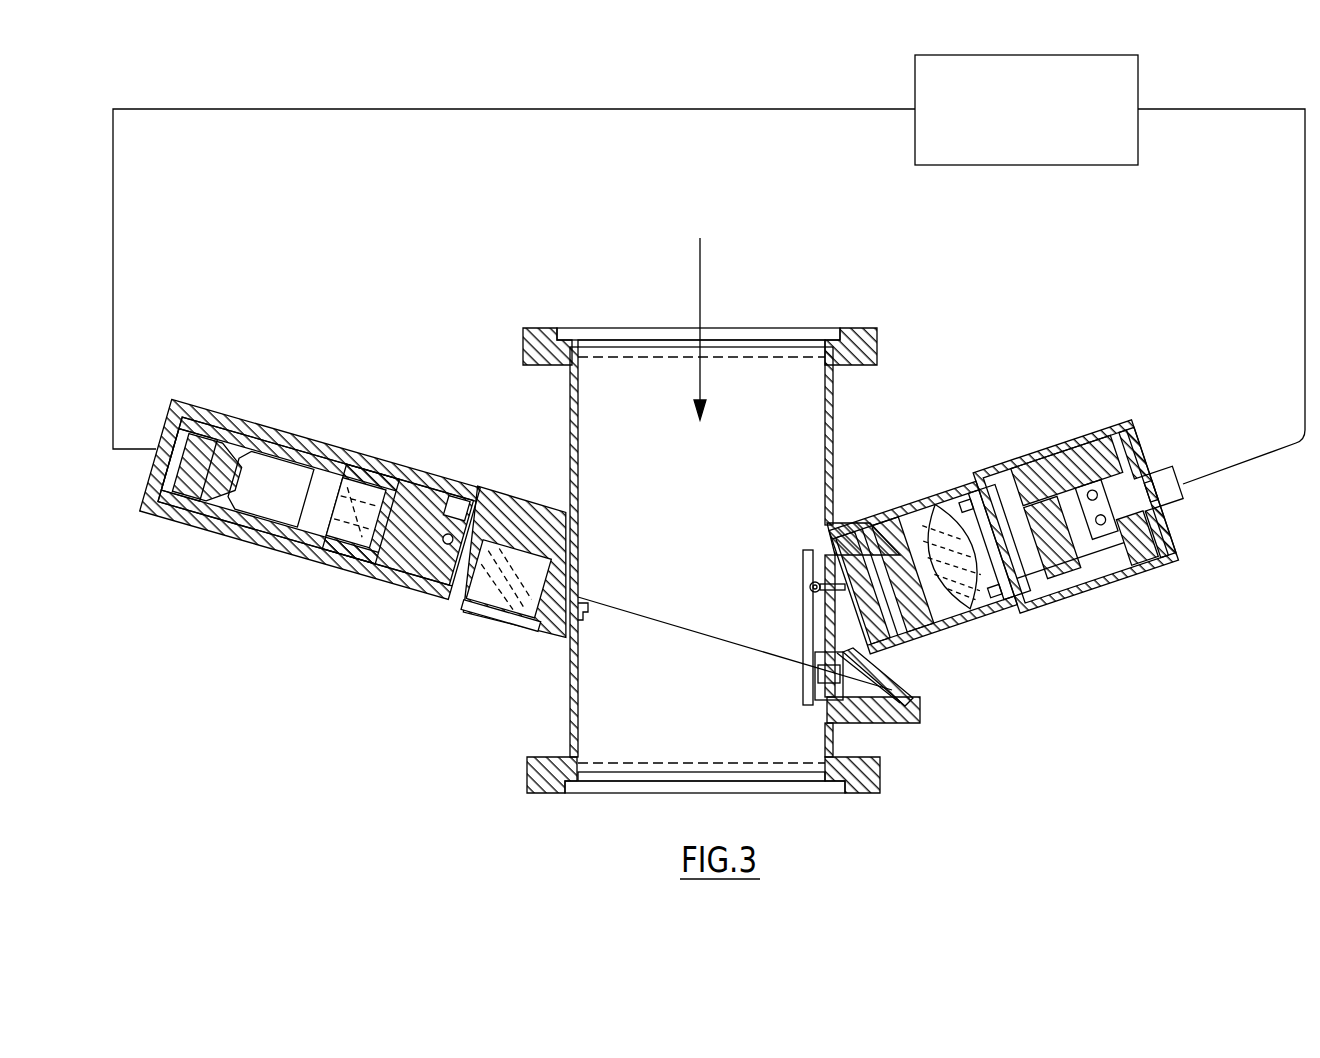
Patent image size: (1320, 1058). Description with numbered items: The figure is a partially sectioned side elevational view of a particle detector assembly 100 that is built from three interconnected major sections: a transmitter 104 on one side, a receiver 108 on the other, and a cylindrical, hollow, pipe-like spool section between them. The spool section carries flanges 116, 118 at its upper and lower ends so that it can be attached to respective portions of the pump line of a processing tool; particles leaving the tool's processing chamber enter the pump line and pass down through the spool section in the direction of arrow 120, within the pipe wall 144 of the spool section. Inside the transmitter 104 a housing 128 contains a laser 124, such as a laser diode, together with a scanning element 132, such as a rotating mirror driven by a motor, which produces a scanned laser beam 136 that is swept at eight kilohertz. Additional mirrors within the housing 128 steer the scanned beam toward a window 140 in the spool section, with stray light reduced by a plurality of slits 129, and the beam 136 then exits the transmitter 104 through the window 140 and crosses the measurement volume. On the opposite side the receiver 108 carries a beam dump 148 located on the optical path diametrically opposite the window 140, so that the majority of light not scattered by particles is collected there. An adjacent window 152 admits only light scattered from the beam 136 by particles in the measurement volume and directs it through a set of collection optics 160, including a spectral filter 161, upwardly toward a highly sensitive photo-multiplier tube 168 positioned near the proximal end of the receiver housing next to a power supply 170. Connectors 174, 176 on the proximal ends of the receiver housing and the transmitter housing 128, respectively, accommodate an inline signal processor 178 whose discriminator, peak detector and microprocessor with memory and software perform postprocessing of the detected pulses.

The detector assembly 100 is at (244, 108).
The transmitter 104 is at (273, 556).
The receiver 108 is at (1064, 600).
The flange 116 is at (880, 340).
The flange 118 is at (880, 781).
The arrow 120 is at (712, 292).
The laser 124 is at (375, 582).
The housing 128 is at (352, 440).
The slits 129 is at (500, 632).
The scanning element 132 is at (260, 500).
The laser beam 136 is at (697, 642).
The window 140 is at (585, 592).
The measurement chamber wall 144 is at (798, 458).
The beam dump 148 is at (878, 720).
The window 152 is at (880, 542).
The collection optics 160 is at (955, 486).
The spectral filter 161 is at (960, 642).
The photo-multiplier tube 168 is at (1075, 590).
The power supply 170 is at (1062, 472).
The connector 174 is at (1182, 470).
The connector 176 is at (228, 432).
The signal processor 178 is at (1082, 168).